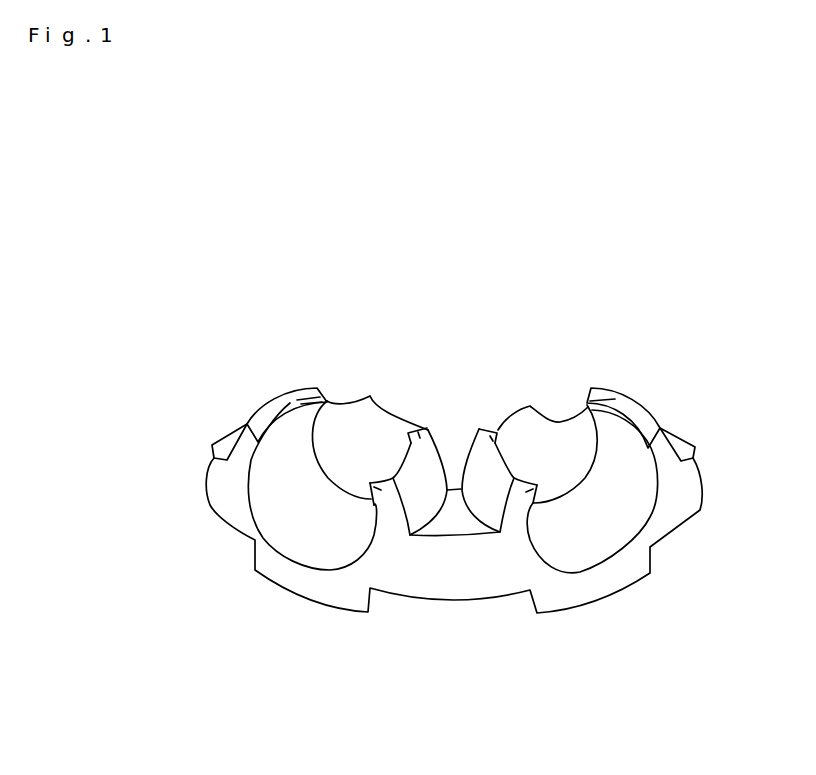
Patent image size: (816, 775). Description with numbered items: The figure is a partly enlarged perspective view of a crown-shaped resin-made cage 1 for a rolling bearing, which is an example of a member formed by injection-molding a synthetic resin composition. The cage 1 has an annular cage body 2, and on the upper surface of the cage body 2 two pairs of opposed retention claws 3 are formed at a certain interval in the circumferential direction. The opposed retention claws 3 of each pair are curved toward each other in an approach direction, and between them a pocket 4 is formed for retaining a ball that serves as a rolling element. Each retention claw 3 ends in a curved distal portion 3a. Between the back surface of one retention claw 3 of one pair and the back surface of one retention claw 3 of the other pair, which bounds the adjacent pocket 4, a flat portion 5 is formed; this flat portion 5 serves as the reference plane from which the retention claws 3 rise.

The cage 1 is at (515, 343).
The annular cage body 2 is at (210, 498).
The retention claws 3 is at (370, 397).
The curved distal portion 3a is at (373, 494).
The pocket 4 is at (283, 527).
The flat portion 5 is at (453, 527).